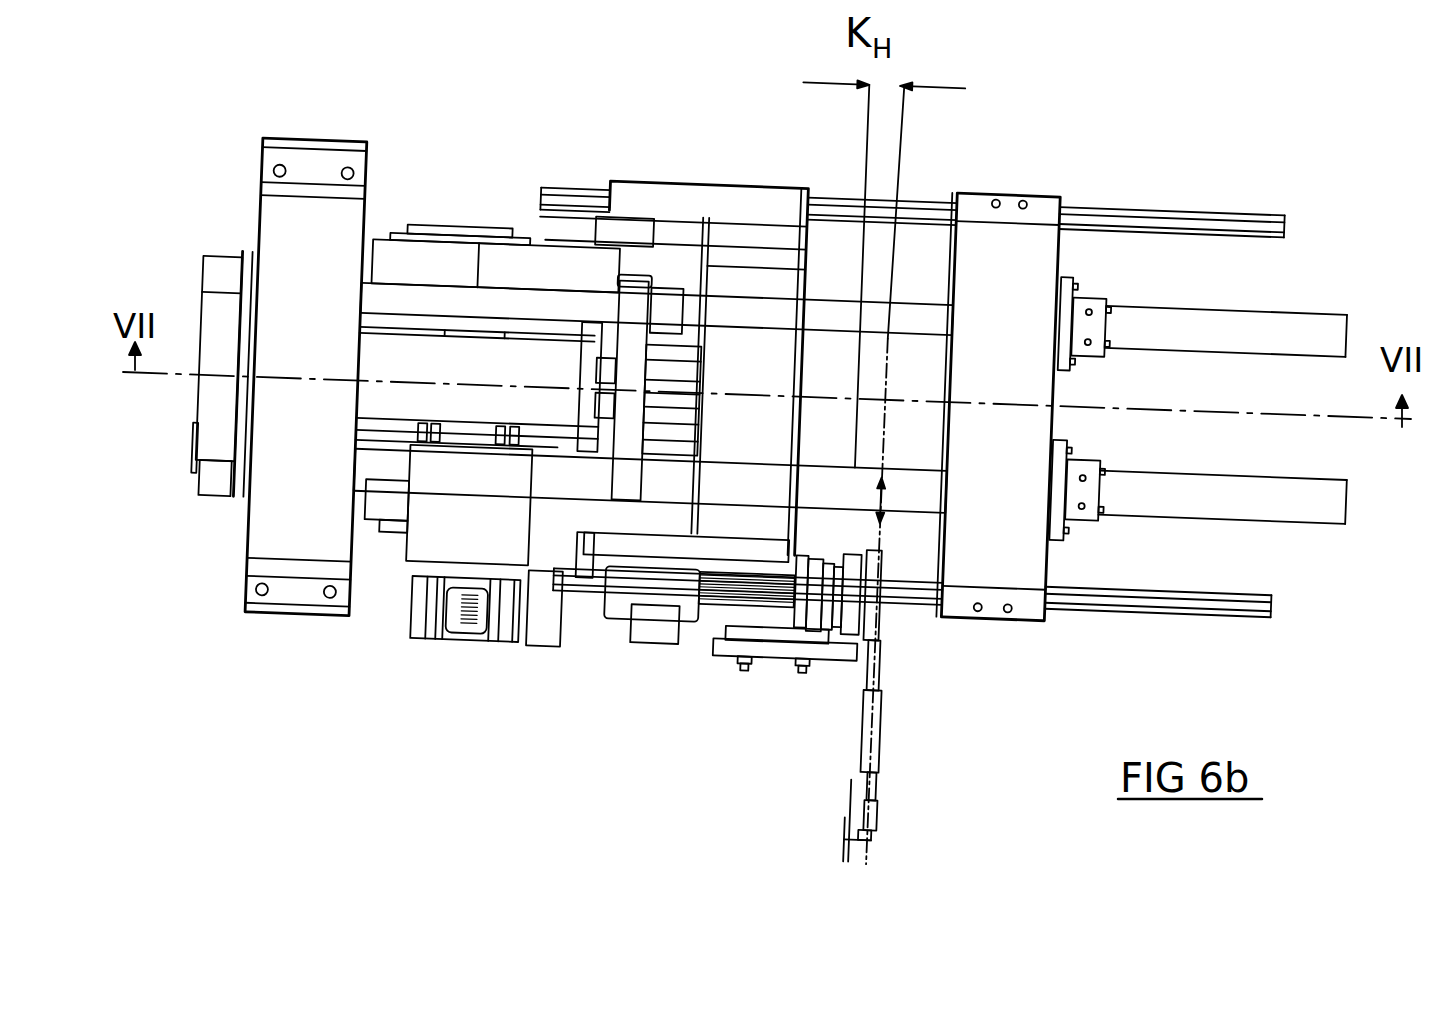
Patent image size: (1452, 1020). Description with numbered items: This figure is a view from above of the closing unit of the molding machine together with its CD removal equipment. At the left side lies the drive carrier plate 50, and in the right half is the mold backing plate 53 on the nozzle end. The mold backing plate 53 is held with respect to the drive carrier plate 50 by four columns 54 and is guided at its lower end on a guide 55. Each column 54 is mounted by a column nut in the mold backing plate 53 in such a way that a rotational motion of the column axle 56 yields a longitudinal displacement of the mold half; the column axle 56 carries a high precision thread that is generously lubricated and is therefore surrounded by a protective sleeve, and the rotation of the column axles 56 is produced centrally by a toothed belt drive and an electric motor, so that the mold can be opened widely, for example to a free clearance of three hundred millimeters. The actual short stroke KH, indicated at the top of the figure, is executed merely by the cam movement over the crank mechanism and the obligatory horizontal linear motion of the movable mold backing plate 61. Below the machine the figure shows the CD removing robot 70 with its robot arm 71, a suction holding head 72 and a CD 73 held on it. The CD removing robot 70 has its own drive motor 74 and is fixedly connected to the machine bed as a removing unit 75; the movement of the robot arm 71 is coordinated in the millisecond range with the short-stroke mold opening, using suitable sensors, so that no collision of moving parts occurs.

The drive carrier plate 50 is at (316, 134).
The mold backing plate on the nozzle end 53 is at (1030, 193).
The columns 54 is at (1239, 318).
The guide 55 is at (1243, 213).
The column axle 56 is at (1242, 487).
The movable mold backing plate 61 is at (751, 178).
The CD removing robot 70 is at (886, 712).
The robot arm 71 is at (883, 668).
The suction holding head 72 is at (875, 832).
The CD 73 is at (848, 803).
The drive motor 74 is at (628, 604).
The removing unit 75 is at (630, 751).